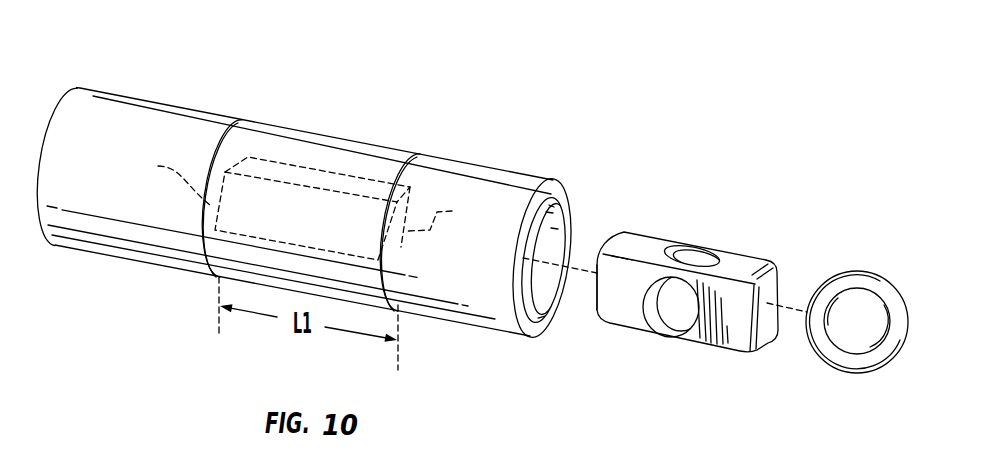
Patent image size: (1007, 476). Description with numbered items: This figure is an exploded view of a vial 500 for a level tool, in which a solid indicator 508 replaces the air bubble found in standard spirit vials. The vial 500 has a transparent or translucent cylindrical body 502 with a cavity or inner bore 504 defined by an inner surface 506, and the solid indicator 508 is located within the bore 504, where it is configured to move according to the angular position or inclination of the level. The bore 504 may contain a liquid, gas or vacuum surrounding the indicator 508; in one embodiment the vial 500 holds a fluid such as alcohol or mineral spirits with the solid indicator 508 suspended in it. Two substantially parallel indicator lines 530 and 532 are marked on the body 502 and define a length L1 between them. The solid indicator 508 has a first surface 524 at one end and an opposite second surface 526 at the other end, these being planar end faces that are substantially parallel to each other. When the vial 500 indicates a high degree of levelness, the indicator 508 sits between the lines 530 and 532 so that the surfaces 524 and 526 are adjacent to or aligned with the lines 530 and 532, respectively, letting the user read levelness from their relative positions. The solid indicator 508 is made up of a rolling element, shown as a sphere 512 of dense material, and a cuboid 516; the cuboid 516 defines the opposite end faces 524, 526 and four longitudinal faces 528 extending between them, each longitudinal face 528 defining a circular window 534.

The vial 500 is at (516, 72).
The cylindrical body 502 is at (153, 247).
The inner bore 504 is at (532, 283).
The inner surface 506 is at (542, 242).
The solid indicator 508 is at (303, 168).
The sphere 512 is at (858, 275).
The cuboid 516 is at (714, 348).
The first surface 524 is at (800, 385).
The second surface 526 is at (588, 293).
The longitudinal faces 528 is at (645, 252).
The indicator line 530 is at (408, 174).
The indicator line 532 is at (237, 139).
The circular window 534 is at (700, 254).